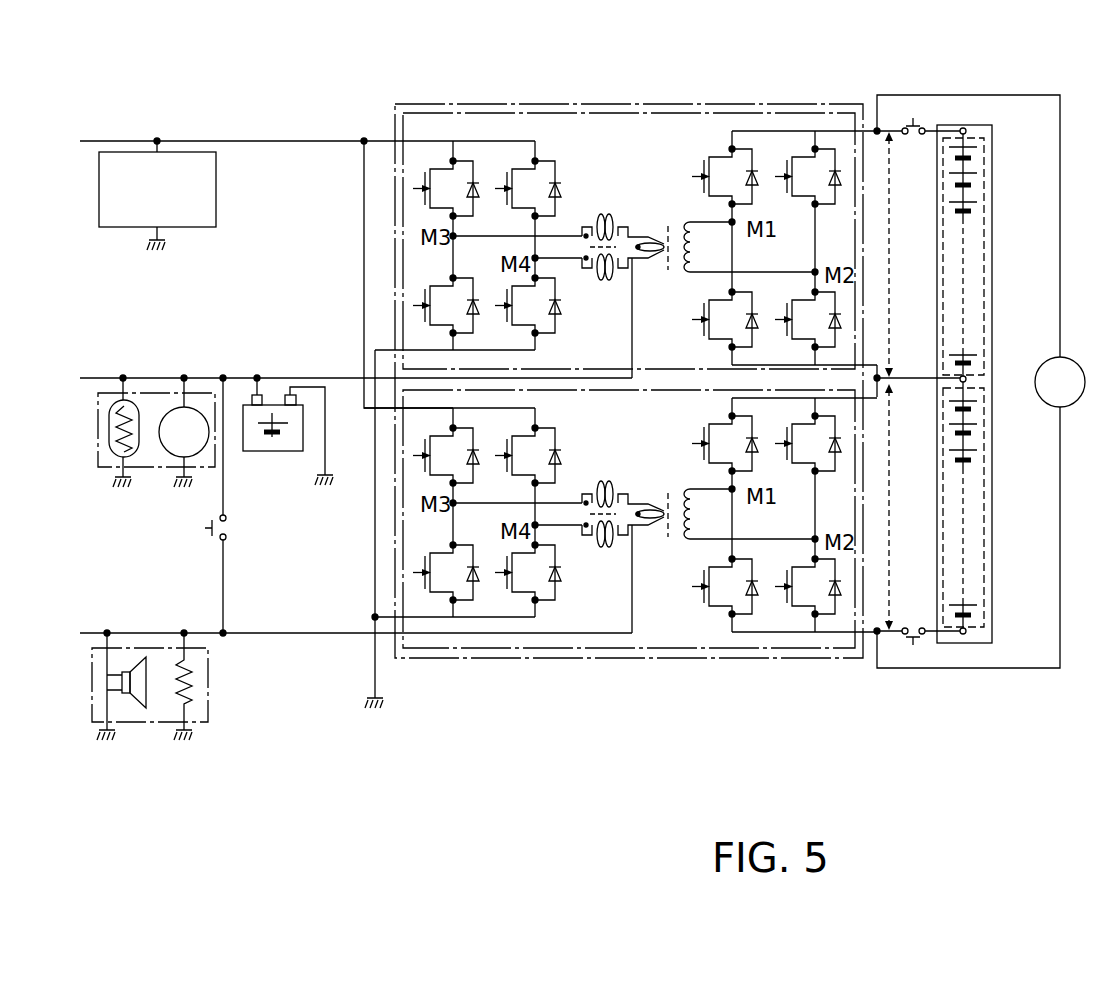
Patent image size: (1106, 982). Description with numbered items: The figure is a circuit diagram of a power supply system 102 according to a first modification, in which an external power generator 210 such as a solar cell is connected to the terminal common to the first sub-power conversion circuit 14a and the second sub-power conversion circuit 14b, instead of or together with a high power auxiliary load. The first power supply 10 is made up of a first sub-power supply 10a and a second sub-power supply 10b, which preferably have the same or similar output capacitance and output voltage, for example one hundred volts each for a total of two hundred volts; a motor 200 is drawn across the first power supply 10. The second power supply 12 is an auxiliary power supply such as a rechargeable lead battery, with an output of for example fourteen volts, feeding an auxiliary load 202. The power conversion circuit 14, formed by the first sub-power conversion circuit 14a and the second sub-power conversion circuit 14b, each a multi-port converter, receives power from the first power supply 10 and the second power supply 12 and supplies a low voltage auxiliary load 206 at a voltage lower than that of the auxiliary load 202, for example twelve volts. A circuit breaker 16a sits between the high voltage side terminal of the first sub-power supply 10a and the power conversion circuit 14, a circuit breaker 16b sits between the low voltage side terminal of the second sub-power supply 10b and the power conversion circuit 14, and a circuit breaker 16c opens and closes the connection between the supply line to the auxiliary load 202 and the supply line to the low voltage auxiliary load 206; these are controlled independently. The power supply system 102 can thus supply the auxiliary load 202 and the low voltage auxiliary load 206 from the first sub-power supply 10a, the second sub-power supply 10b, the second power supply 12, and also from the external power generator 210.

The power supply system 102 is at (540, 838).
The external power generator 210 is at (99, 184).
The auxiliary load 202 is at (98, 418).
The second power supply 12 is at (283, 451).
The circuit breaker 16c is at (230, 528).
The low voltage auxiliary load 206 is at (92, 680).
The power conversion circuit 14 is at (776, 104).
The first sub-power conversion circuit 14a is at (472, 113).
The second sub-power conversion circuit 14b is at (462, 650).
The circuit breaker 16a is at (916, 140).
The circuit breaker 16b is at (912, 622).
The first power supply 10 is at (992, 140).
The first sub-power supply 10a is at (985, 174).
The second sub-power supply 10b is at (985, 478).
The motor 200 is at (1046, 366).